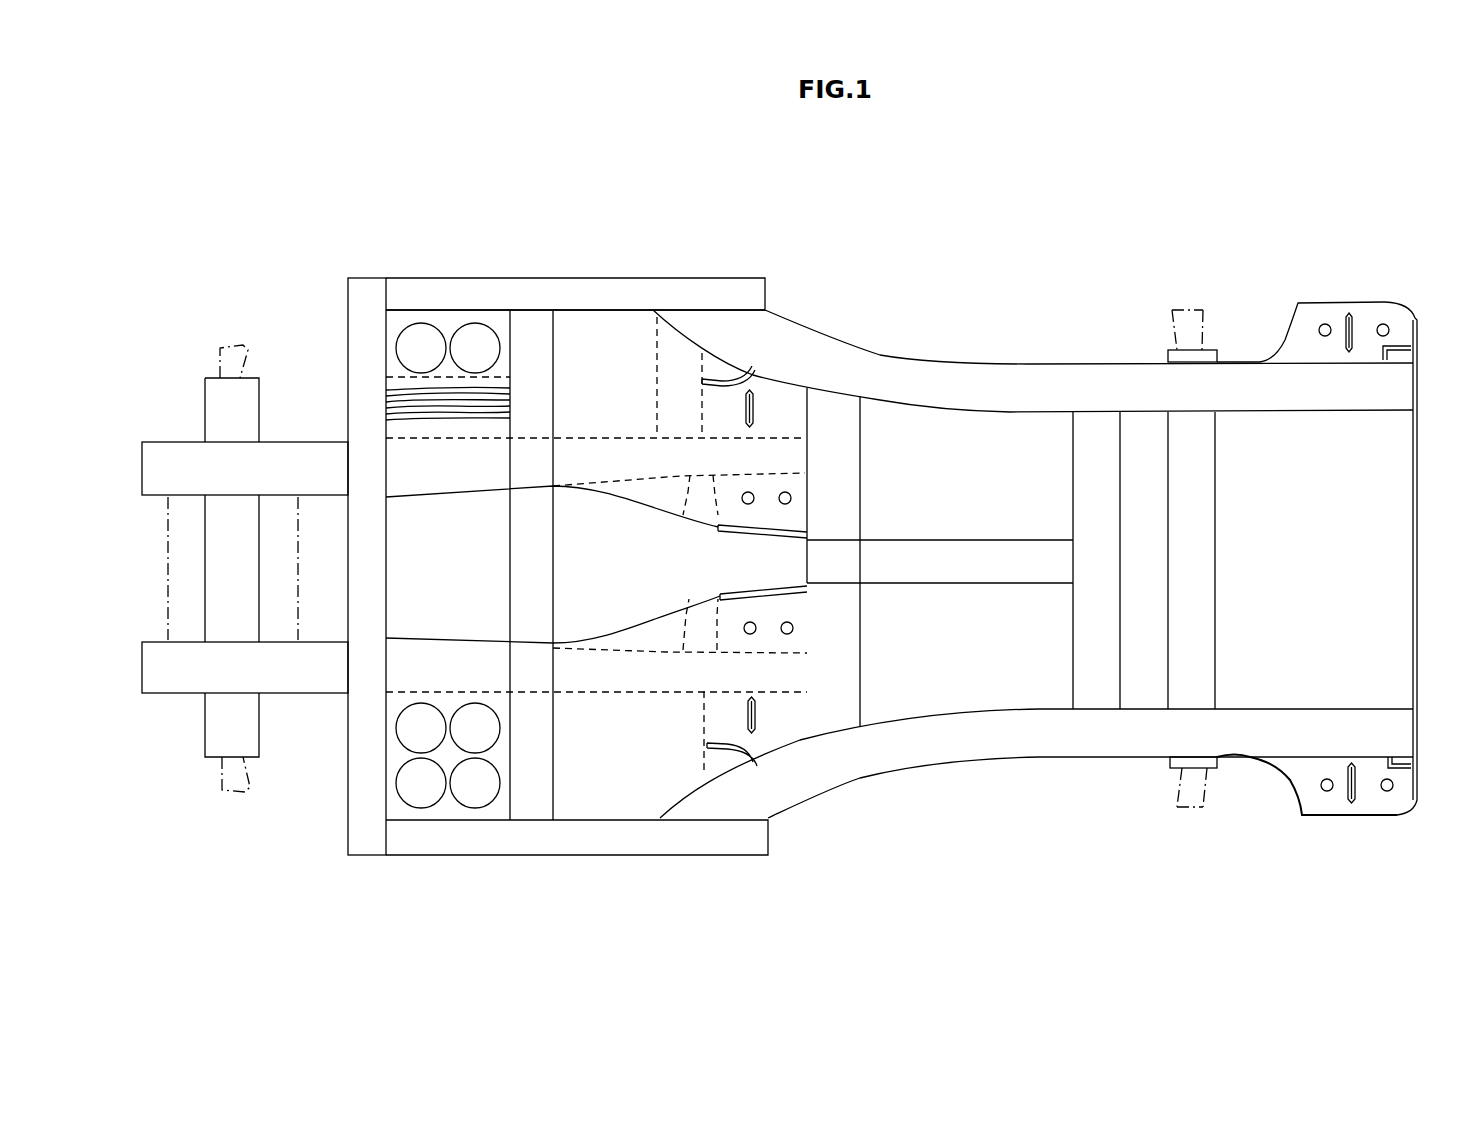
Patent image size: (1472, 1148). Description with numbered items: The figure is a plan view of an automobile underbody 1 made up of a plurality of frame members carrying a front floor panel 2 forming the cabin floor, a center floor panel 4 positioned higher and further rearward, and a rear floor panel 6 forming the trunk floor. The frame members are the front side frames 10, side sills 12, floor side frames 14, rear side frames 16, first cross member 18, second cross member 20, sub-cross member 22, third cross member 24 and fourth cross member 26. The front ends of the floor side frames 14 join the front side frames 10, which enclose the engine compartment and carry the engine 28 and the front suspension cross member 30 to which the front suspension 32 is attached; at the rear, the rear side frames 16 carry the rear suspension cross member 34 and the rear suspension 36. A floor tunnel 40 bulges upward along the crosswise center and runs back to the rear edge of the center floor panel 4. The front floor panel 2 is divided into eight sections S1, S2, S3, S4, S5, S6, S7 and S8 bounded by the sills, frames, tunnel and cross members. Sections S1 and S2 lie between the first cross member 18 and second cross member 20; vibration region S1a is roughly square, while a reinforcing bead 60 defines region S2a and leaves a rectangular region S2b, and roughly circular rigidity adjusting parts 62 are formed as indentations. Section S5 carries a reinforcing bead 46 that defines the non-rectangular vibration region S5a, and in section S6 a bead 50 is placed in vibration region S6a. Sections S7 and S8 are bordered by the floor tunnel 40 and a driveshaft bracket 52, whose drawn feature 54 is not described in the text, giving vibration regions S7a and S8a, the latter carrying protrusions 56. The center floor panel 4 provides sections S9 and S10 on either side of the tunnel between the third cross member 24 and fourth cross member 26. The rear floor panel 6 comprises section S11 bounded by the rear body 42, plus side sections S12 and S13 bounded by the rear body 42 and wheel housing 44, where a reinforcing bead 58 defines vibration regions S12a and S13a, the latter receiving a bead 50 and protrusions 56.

The automobile underbody 1 is at (1048, 269).
The front floor panel 2 is at (573, 325).
The center floor panel 4 is at (890, 433).
The rear floor panel 6 is at (1278, 430).
The front side frames 10 is at (178, 442).
The side sills 12 is at (432, 278).
The floor side frames 14 is at (650, 437).
The rear side frames 16 is at (847, 342).
The No. 1 cross member 18 is at (360, 278).
The No. 2 cross member 20 is at (510, 313).
The sub-cross member 22 is at (657, 437).
The No. 3 cross member 24 is at (803, 407).
The No. 4 cross member 26 is at (1072, 427).
The engine 28 is at (165, 568).
The front suspension cross member 30 is at (205, 380).
The front suspension 32 is at (218, 345).
The rear suspension cross member 34 is at (1168, 353).
The rear suspension 36 is at (1172, 323).
The floor tunnel 40 is at (415, 637).
The rear body 42 is at (1368, 320).
The wheel housing 44 is at (1287, 337).
The reinforcing bead 46 is at (730, 372).
The bead 50 is at (750, 372).
The bracket 52 is at (687, 520).
The flange 54 is at (717, 533).
The protrusions 56 is at (783, 492).
The reinforcing bead 58 is at (1400, 335).
The reinforcing bead 60 is at (387, 415).
The rigidity adjusting parts 62 is at (397, 358).
The floor panel section S1 is at (407, 813).
The vibration region S1a is at (397, 806).
The floor panel section S2 is at (393, 353).
The region S2a is at (413, 423).
The region S2b is at (407, 320).
The floor panel section S3 is at (588, 775).
The floor panel section S4 is at (630, 328).
The floor panel section S5 is at (735, 757).
The vibration region S5a is at (787, 712).
The floor panel section S6 is at (735, 372).
The vibration region S6a is at (717, 400).
The floor panel section S7 is at (663, 637).
The vibration region S7a is at (763, 617).
The floor panel section S8 is at (677, 482).
The vibration region S8a is at (757, 518).
The floor panel section S9 is at (1050, 693).
The floor panel section S10 is at (980, 450).
The floor panel section S11 is at (1267, 687).
The floor panel section S12 is at (1333, 803).
The vibration region S12a is at (1397, 810).
The floor panel section S13 is at (1363, 320).
The vibration region S13a is at (1303, 333).